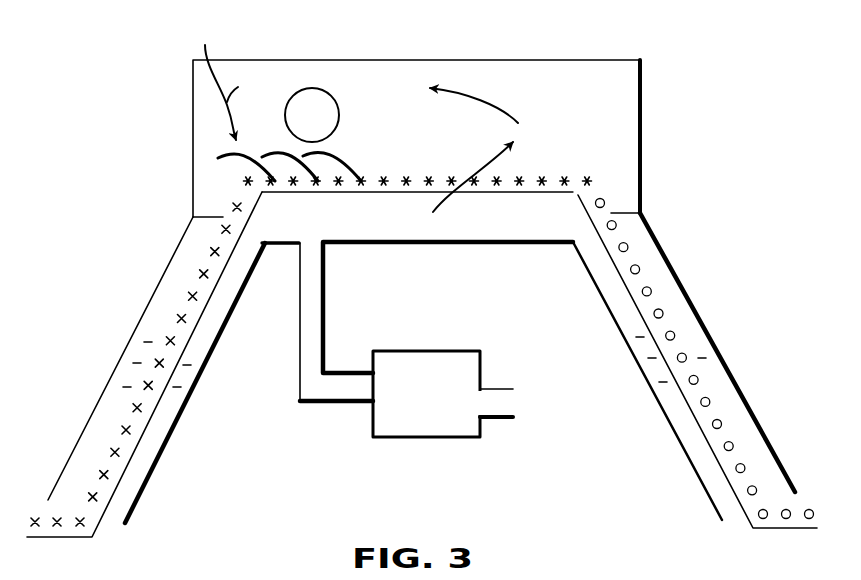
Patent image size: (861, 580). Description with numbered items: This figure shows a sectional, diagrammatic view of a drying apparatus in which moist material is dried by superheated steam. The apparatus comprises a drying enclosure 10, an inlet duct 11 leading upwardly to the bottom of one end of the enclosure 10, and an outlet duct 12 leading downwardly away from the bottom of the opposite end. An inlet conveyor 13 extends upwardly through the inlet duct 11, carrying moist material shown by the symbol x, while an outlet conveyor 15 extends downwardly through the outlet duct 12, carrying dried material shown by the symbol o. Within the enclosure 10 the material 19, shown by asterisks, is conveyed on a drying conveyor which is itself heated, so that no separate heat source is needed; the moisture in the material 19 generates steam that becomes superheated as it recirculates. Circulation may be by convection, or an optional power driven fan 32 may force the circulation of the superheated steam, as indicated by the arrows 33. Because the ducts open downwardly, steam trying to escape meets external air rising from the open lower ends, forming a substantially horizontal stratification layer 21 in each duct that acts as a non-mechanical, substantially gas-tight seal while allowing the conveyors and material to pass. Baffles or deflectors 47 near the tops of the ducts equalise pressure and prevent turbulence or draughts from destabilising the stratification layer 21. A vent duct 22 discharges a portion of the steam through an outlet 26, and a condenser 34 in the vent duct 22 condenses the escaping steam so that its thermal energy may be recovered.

The drying enclosure 10 is at (353, 60).
The inlet duct 11 is at (143, 320).
The outlet duct 12 is at (685, 281).
The inlet conveyor 13 is at (153, 412).
The outlet conveyor 15 is at (690, 410).
The materials 19 is at (222, 157).
The stratification layer 21 is at (197, 341).
The vent duct 22 is at (325, 328).
The outlet 26 is at (507, 403).
The power driven fan 32 is at (300, 88).
The arrows 33 is at (495, 277).
The condenser 34 is at (436, 437).
The baffles and/or deflectors 47 is at (217, 218).